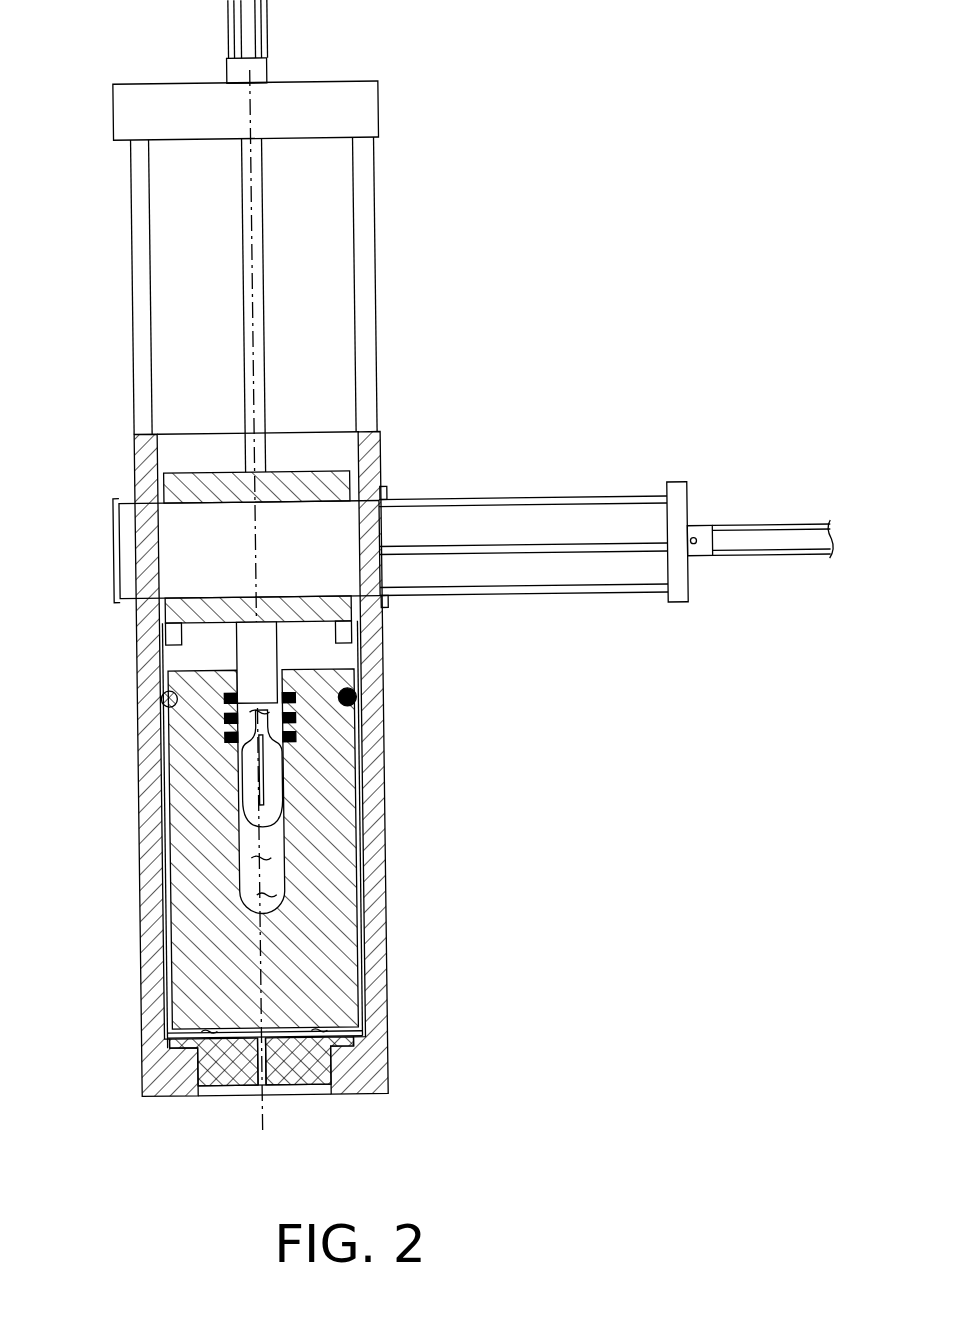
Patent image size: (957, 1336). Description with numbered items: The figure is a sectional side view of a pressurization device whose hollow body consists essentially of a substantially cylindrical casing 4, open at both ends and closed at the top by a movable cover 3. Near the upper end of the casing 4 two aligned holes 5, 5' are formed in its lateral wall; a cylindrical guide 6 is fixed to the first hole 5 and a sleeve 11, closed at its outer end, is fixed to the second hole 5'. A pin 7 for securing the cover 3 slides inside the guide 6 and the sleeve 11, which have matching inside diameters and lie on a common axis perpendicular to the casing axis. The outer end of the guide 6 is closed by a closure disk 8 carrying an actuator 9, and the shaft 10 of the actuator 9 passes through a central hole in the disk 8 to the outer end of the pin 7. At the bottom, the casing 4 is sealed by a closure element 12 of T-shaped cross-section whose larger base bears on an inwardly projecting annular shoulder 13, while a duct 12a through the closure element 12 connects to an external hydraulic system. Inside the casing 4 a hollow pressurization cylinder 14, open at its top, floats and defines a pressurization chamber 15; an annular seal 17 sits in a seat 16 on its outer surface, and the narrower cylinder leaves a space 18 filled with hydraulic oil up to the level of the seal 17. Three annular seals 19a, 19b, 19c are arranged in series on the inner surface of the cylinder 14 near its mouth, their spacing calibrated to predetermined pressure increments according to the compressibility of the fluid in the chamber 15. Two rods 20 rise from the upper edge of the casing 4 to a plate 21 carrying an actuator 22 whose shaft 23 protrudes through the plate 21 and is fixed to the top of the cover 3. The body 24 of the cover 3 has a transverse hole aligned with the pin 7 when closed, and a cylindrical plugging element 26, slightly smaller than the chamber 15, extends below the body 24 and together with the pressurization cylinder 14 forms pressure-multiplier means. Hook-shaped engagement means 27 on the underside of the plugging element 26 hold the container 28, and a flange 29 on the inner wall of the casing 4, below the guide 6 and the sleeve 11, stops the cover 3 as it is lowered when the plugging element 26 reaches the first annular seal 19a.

The cover 3 is at (210, 460).
The casing 4 is at (371, 781).
The first hole 5 is at (442, 480).
The second hole 5' is at (84, 593).
The cylindrical guide 6 is at (538, 501).
The pin 7 is at (133, 544).
The closure disk 8 is at (683, 510).
The actuator 9 is at (778, 562).
The shaft 10 is at (604, 549).
The sleeve 11 is at (128, 500).
The closure element 12 is at (227, 1083).
The duct 12a is at (262, 1073).
The annular shoulder 13 is at (319, 1090).
The pressurization cylinder 14 is at (345, 844).
The pressurization chamber 15 is at (270, 877).
The seat 16 is at (225, 718).
The annular seal 17 is at (162, 698).
The space 18 is at (369, 926).
The first annular seal 19a is at (296, 698).
The second annular seal 19b is at (357, 700).
The third annular seal 19c is at (296, 738).
The rods 20 is at (141, 238).
The plate 21 is at (367, 105).
The actuator 22 is at (262, 40).
The shaft 23 is at (257, 201).
The body 24 is at (348, 488).
The plugging element 26 is at (273, 653).
The engagement means 27 is at (228, 735).
The container 28 is at (247, 787).
The flange 29 is at (166, 632).